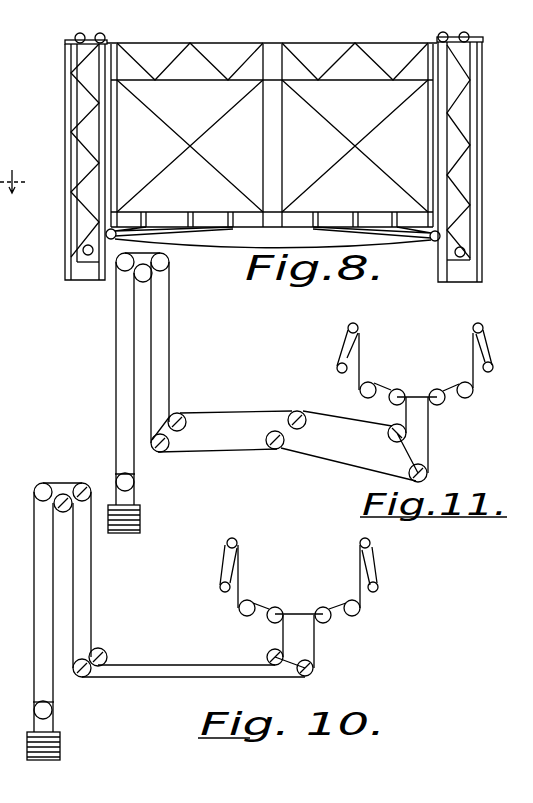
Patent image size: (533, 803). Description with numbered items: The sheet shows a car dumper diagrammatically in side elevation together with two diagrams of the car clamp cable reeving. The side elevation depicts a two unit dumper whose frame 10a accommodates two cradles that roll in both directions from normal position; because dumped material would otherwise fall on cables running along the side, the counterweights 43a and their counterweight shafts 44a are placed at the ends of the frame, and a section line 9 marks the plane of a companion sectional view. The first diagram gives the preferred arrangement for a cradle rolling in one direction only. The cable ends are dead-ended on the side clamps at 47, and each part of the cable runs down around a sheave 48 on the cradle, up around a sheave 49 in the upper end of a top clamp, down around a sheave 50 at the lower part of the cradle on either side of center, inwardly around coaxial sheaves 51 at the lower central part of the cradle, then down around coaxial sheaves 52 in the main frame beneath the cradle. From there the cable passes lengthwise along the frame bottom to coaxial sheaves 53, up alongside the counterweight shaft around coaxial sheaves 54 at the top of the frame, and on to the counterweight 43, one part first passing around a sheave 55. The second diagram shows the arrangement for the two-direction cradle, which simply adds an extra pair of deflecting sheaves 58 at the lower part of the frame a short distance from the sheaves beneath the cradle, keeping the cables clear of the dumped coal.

In FIG. 8, the section line 9— 9 is at (20, 182).
In FIG. 8, the frame 10a is at (354, 43).
In FIG. 10, the clamp counterweight 43 is at (62, 744).
In FIG. 8, the counterweight 43a is at (80, 266).
In FIG. 11, the counterweight 43a is at (149, 520).
In FIG. 8, the counterweight shaft 44a is at (66, 119).
In FIG. 11, the cable dead-end 47 is at (485, 348).
In FIG. 10, the cable dead-end 47 is at (227, 563).
In FIG. 11, the sheave 48 is at (422, 382).
In FIG. 10, the sheave 48 is at (222, 592).
In FIG. 11, the sheave 49 is at (473, 330).
In FIG. 10, the sheave 49 is at (228, 546).
In FIG. 10, the sheave 50 is at (245, 615).
In FIG. 10, the sheave 51 is at (278, 618).
In FIG. 10, the sheave 52 is at (310, 680).
In FIG. 10, the sheave 53 is at (189, 654).
In FIG. 10, the sheave 54 is at (78, 483).
In FIG. 10, the sheave 55 is at (42, 484).
In FIG. 11, the deflecting sheave 58 is at (272, 449).